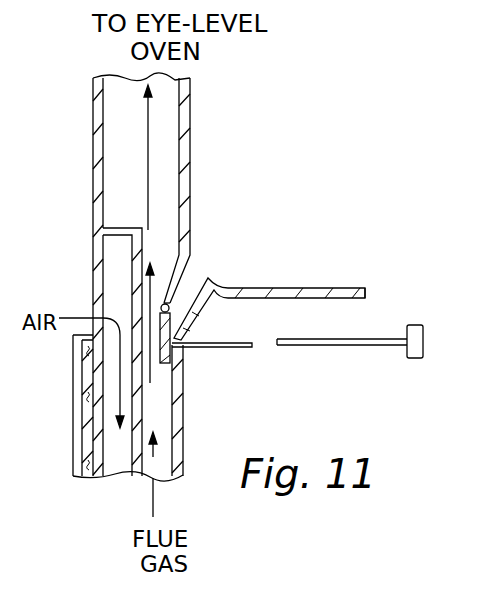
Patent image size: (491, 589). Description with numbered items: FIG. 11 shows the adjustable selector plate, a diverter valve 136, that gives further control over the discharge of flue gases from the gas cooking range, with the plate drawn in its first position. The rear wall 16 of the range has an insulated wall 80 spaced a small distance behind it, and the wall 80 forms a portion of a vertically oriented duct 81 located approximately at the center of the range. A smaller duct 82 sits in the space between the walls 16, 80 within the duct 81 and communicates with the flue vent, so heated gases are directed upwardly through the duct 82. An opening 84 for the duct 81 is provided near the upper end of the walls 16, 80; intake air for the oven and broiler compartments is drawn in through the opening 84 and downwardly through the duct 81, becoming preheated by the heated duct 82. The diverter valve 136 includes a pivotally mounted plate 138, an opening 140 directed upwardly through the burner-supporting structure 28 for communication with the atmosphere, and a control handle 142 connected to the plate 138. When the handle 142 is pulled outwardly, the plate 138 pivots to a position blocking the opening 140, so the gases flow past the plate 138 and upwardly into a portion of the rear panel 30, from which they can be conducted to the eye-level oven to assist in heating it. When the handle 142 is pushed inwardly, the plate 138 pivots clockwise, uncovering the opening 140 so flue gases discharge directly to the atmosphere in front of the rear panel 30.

The rear wall 16 is at (178, 422).
The burner-supporting structure 28 is at (356, 289).
The rear panel 30 is at (187, 118).
The insulated wall 80 is at (77, 423).
The duct 81 is at (125, 450).
The duct 82 is at (150, 400).
The opening 84 is at (95, 295).
The diverter valve 136 is at (216, 268).
The pivotally mounted plate 138 is at (163, 336).
The opening 140 is at (190, 282).
The control handle 142 is at (322, 339).